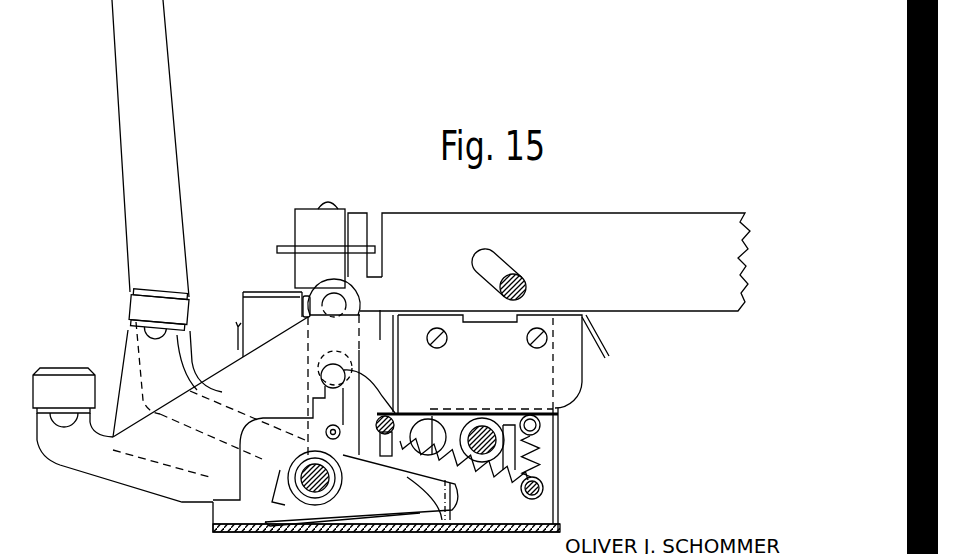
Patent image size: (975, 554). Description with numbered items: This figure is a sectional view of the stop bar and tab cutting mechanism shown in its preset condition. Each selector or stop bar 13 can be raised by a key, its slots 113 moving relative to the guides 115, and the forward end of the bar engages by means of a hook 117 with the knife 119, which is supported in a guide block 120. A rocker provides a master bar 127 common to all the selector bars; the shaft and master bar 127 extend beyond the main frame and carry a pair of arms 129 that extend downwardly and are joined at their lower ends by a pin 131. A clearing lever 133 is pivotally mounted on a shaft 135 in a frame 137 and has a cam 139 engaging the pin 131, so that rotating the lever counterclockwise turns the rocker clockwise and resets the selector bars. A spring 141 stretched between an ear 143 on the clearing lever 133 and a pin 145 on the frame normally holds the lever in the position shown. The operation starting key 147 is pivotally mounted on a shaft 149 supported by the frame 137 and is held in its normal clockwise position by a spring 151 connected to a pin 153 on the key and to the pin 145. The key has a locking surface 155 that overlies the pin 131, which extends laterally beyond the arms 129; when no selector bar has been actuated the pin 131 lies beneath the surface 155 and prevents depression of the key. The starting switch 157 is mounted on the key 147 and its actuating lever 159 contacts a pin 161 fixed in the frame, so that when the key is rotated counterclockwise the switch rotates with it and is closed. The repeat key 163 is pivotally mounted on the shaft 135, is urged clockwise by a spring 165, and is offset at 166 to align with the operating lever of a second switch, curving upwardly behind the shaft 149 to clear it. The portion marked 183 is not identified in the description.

The selector or stop bar 13 is at (590, 222).
The slots 113 is at (488, 262).
The guides 115 is at (520, 285).
The hook 117 is at (358, 223).
The knife 119 is at (283, 246).
The guide block 120 is at (305, 212).
The master bar 127 is at (338, 303).
The arms 129 is at (357, 312).
The pin 131 is at (348, 413).
The clearing lever 133 is at (158, 75).
The shaft 135 is at (338, 487).
The frame 137 is at (264, 525).
The cam 139 is at (348, 447).
The spring 141 is at (458, 430).
The ear 143 is at (408, 438).
The pin 145 is at (545, 488).
The operation starting key 147 is at (43, 382).
The shaft 149 is at (495, 425).
The spring 151 is at (545, 450).
The pin 153 is at (540, 423).
The locking surface 155 is at (313, 412).
The starting switch 157 is at (572, 371).
The actuating lever 159 is at (392, 403).
The pin 161 is at (397, 410).
The repeat key 163 is at (130, 307).
The spring 165 is at (283, 478).
The offset 166 is at (448, 522).
The handle grip 183 is at (206, 4).